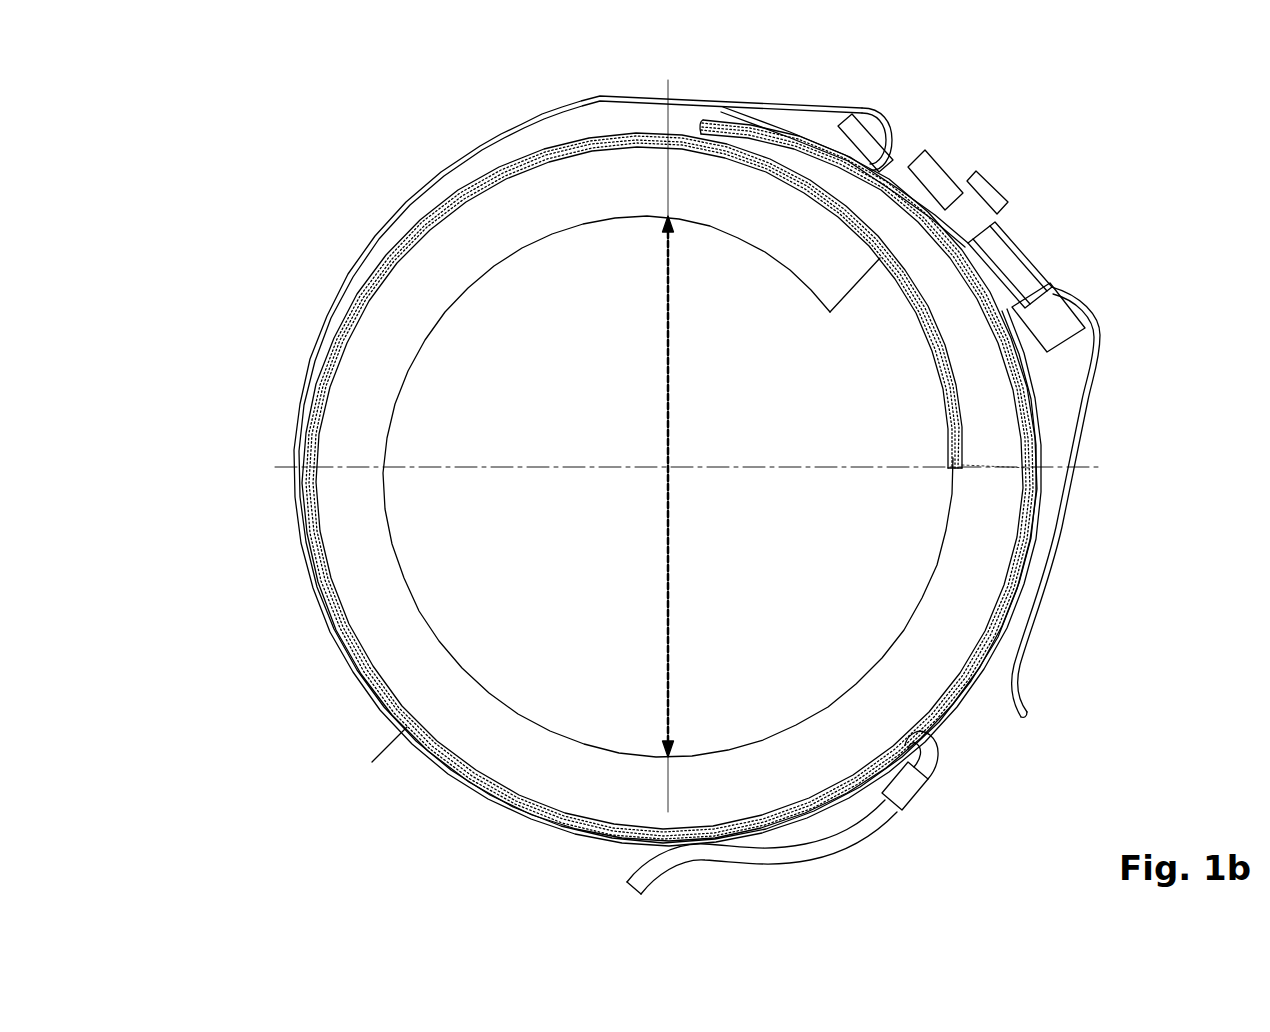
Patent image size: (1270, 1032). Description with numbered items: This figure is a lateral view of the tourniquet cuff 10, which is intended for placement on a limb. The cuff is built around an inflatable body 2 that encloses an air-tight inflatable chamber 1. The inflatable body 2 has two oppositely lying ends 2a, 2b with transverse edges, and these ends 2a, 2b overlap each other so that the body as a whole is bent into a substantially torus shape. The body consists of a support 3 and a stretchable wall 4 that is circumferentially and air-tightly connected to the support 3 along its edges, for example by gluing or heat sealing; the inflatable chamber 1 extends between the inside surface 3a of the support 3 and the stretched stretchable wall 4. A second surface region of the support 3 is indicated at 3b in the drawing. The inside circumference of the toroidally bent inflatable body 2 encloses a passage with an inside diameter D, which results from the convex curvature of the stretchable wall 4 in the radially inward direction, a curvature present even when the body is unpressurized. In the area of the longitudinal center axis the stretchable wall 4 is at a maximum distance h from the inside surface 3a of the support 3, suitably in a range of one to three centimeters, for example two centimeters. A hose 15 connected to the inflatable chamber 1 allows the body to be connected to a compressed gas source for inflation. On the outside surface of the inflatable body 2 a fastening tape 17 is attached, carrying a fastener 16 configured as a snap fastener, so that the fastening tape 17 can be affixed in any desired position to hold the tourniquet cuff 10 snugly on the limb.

The inflatable chamber 1 is at (907, 681).
The inflatable body 2 is at (706, 393).
The end of the inflatable body 2a is at (944, 438).
The end of the inflatable body 2b is at (718, 119).
The support 3 is at (633, 481).
The inside surface of the support 3a is at (483, 185).
The outer band layer 3b is at (422, 212).
The stretchable wall 4 is at (848, 688).
The tourniquet cuff 10 is at (261, 261).
The hose 15 is at (850, 846).
The fastener 16 is at (1037, 216).
The fastening tape 17 is at (510, 125).
The inside diameter D is at (675, 486).
The distance h is at (500, 645).